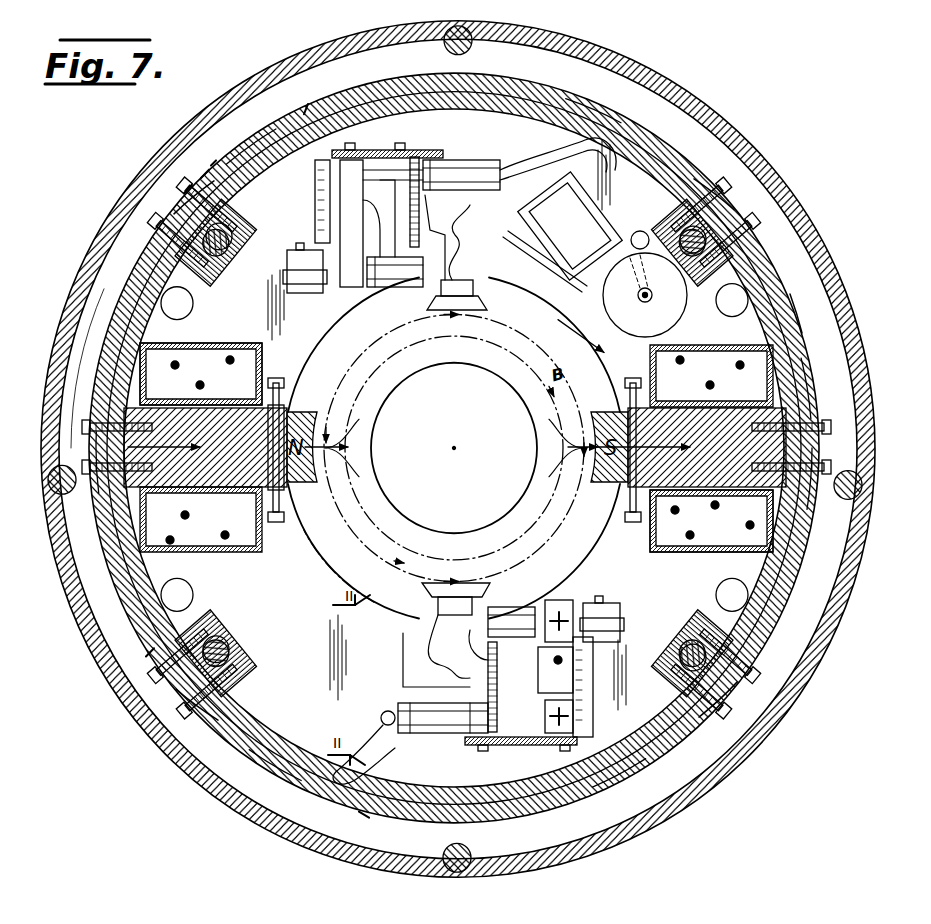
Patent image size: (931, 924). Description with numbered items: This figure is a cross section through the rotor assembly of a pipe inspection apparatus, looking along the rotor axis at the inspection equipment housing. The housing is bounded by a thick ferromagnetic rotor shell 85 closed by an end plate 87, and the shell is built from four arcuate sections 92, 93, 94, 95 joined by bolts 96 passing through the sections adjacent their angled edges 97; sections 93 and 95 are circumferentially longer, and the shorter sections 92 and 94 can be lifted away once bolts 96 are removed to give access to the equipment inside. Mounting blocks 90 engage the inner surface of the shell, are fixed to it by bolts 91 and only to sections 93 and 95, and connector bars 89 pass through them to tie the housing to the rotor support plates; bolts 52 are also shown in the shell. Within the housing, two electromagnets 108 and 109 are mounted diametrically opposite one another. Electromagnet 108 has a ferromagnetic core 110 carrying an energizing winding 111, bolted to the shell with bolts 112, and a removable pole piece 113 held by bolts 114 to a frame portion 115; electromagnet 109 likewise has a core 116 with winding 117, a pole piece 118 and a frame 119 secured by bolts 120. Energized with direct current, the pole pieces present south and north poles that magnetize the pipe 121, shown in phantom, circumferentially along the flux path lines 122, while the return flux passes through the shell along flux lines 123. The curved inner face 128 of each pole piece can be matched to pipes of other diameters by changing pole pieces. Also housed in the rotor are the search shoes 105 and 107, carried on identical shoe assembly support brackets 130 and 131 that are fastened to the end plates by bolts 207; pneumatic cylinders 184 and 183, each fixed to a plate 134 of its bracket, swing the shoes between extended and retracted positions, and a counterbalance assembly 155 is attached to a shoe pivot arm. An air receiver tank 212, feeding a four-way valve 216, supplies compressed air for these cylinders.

The bolt hole 52 is at (455, 447).
The rotor shell 85 is at (431, 482).
The end plate 87 is at (357, 572).
The connector bar 89 is at (454, 447).
The mounting block 90 is at (454, 447).
The bolt 91 is at (430, 442).
The arcuate section 92 is at (505, 360).
The arcuate section 93 is at (87, 423).
The arcuate section 94 is at (454, 435).
The arcuate section 95 is at (807, 305).
The bolt 96 is at (365, 450).
The angled edge 97 is at (254, 486).
The search shoe 105 is at (488, 300).
The search shoe 107 is at (488, 585).
The electromagnet 108 is at (662, 555).
The electromagnet 109 is at (248, 555).
The ferromagnetic core 110 is at (690, 498).
The energizing winding 111 is at (725, 352).
The bolt 112 is at (85, 422).
The pole piece 113 is at (628, 495).
The bolt 114 is at (635, 522).
The frame portion 115 is at (593, 355).
The core 116 is at (240, 402).
The winding 117 is at (215, 348).
The pole piece 118 is at (292, 388).
The frame 119 is at (288, 380).
The bolt 120 is at (283, 512).
The pipe 121 is at (285, 522).
The flux path lines 122 is at (454, 447).
The flux lines 123 is at (475, 462).
The inner face 128 is at (454, 448).
The shoe assembly support bracket 130 is at (358, 150).
The shoe assembly support bracket 131 is at (598, 748).
The plate 134 is at (414, 157).
The counterbalance assembly 155 is at (290, 255).
The pneumatic cylinder 183 is at (400, 708).
The pneumatic cylinder 184 is at (452, 162).
The bolt 207 is at (562, 661).
The air receiver tank 212 is at (600, 305).
The four-way valve 216 is at (572, 188).